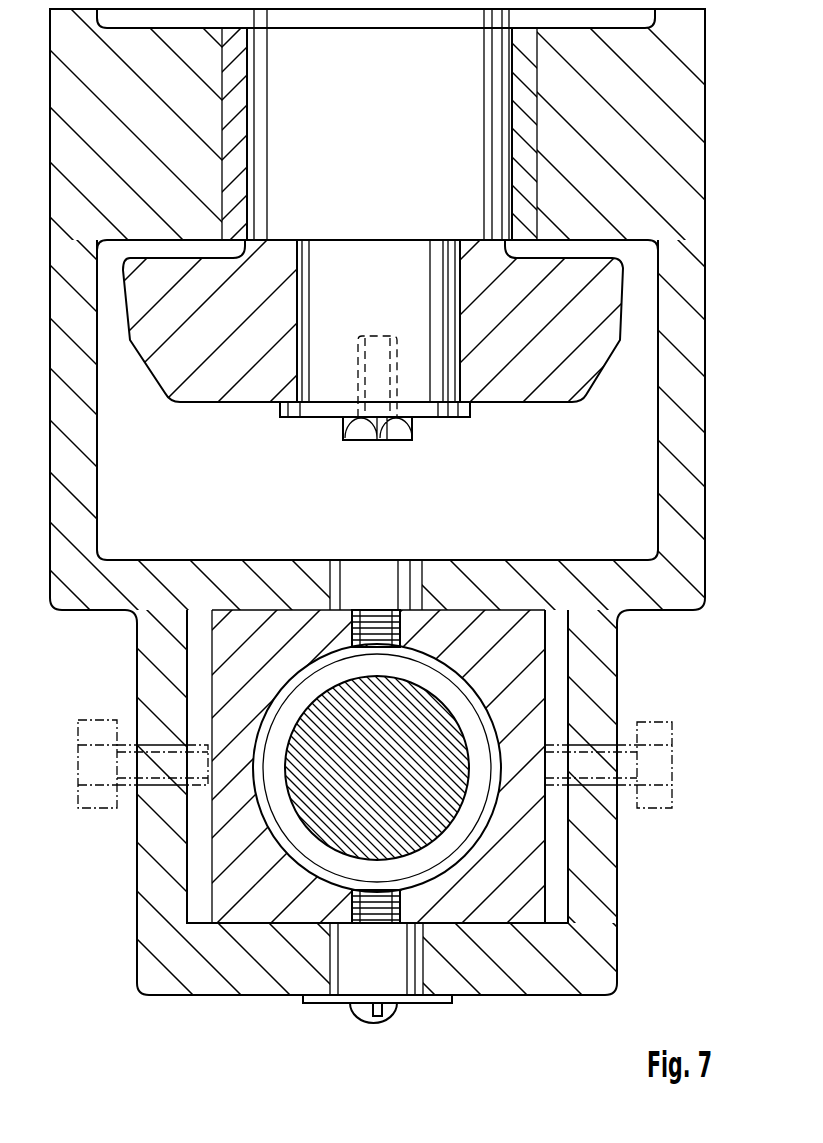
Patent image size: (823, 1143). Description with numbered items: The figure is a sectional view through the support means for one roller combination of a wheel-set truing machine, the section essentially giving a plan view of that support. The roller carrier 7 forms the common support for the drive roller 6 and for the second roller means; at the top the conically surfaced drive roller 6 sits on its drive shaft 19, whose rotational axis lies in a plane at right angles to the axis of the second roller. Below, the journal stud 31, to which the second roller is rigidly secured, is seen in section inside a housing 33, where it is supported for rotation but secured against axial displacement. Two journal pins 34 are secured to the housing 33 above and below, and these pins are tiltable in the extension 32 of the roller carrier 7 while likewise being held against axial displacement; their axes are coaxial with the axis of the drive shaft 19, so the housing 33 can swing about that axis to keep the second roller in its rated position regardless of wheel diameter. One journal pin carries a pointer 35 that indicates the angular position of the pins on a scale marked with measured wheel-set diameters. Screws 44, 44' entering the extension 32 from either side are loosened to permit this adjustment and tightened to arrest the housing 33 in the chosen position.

The roller carrier 7 is at (635, 100).
The drive shaft 19 is at (478, 170).
The drive roller 6 is at (560, 312).
The journal stud 31 is at (375, 697).
The extension of the roller carrier 32 is at (620, 890).
The housing 33 is at (528, 835).
The journal pin 34 is at (408, 562).
The pointer 35 is at (450, 1005).
The screw 44 is at (633, 761).
The screw 44' is at (122, 754).